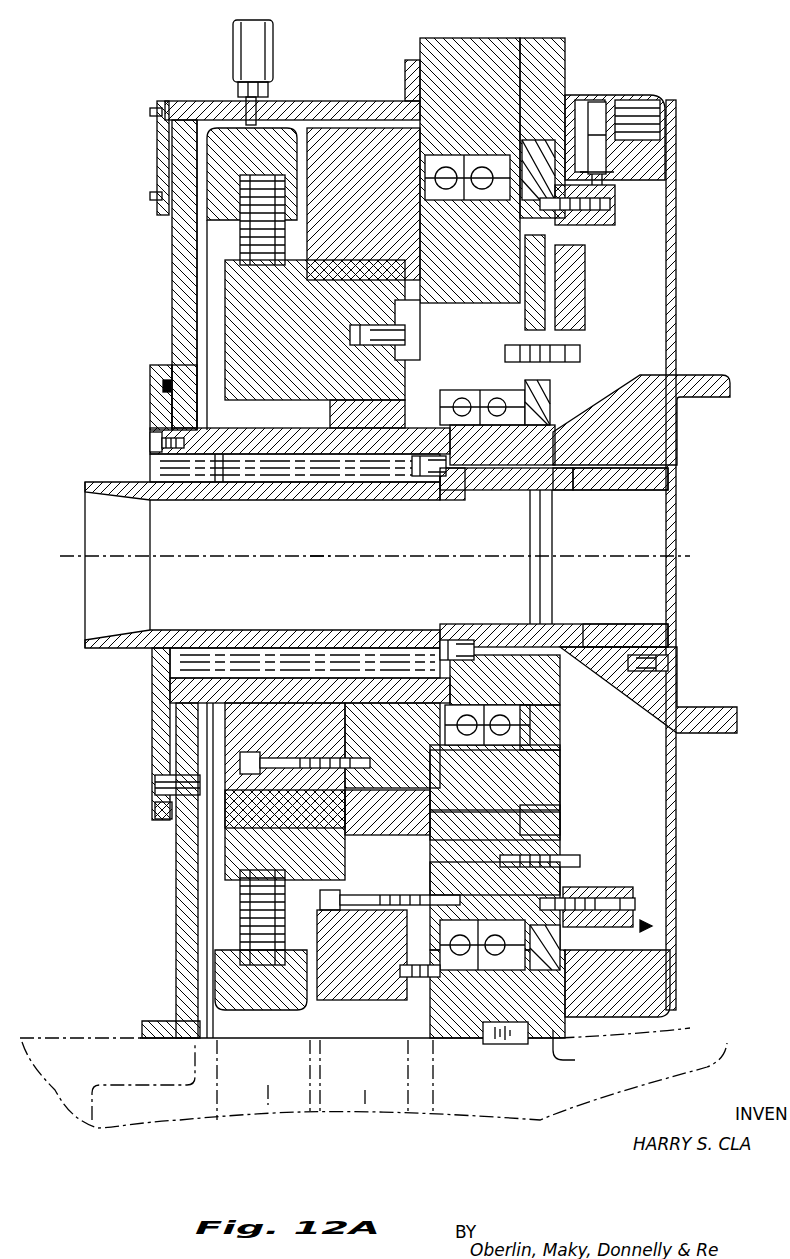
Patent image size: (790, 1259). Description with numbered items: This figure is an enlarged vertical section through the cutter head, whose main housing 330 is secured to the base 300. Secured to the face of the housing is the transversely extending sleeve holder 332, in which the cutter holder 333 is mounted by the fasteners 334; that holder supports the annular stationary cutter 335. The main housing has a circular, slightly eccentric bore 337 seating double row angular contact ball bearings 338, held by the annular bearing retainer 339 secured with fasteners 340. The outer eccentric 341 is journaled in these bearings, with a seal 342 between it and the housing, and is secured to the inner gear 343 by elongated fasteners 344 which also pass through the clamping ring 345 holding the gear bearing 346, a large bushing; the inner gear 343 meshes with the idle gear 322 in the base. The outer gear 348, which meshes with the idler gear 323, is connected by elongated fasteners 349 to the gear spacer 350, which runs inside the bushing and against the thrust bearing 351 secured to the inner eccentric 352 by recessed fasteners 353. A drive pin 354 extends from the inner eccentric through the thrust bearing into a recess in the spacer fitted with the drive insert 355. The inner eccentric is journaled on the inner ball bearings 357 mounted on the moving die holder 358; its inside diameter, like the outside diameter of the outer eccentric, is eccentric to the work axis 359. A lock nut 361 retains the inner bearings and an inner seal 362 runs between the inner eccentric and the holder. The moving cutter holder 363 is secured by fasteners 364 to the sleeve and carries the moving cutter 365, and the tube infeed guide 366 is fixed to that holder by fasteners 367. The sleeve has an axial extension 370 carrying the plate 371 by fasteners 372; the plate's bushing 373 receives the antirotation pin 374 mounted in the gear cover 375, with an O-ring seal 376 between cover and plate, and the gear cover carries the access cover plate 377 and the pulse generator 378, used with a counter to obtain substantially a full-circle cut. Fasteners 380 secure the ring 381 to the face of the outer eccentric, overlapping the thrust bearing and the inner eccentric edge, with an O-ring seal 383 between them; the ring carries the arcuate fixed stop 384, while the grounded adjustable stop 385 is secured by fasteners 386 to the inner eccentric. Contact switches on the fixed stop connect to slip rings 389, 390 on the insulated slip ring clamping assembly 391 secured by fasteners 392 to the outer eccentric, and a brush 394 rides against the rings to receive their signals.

The base 300 is at (715, 1025).
The idle gear 322 is at (365, 1110).
The idler gear 323 is at (268, 1108).
The main housing 330 is at (581, 1047).
The sleeve holder 332 is at (668, 692).
The cutter holder 333 is at (640, 626).
The fasteners 334 is at (668, 658).
The annular stationary cutter 335 is at (572, 492).
The eccentric bore 337 is at (482, 968).
The double row angular contact ball bearings 338 is at (490, 160).
The annular bearing retainer 339 is at (412, 1040).
The fasteners 340 is at (410, 1003).
The outer eccentric 341 is at (545, 925).
The seal 342 is at (575, 953).
The inner gear 343 is at (360, 150).
The elongated fasteners 344 is at (352, 912).
The clamping ring 345 is at (330, 942).
The gear bearing 346 is at (345, 835).
The outer gear 348 is at (240, 848).
The elongated fasteners 349 is at (262, 760).
The gear spacer 350 is at (345, 760).
The thrust bearing 351 is at (440, 392).
The inner eccentric 352 is at (560, 776).
The recessed fasteners 353 is at (420, 750).
The drive pin 354 is at (362, 333).
The drive insert 355 is at (352, 352).
The double row angular contact ball bearings 357 is at (480, 705).
The moving die holder 358 is at (458, 492).
The work axis 359 is at (335, 560).
The lock nut 361 is at (405, 432).
The inner seal 362 is at (555, 735).
The cutter holder 363 is at (533, 505).
The fasteners 364 is at (470, 645).
The moving cutter 365 is at (557, 492).
The tube infeed guide 366 is at (262, 492).
The fasteners 367 is at (425, 476).
The axial extension 370 is at (220, 465).
The plate 371 is at (152, 400).
The fasteners 372 is at (150, 442).
The bushing 373 is at (155, 808).
The antirotation pin 374 is at (155, 785).
The gear cover 375 is at (172, 262).
The O-ring seal 376 is at (152, 378).
The access cover plate 377 is at (157, 155).
The pulse generator 378 is at (273, 50).
The fasteners 380 is at (565, 861).
The ring 381 is at (555, 838).
The O-ring seal 383 is at (545, 815).
The fixed stop 384 is at (560, 300).
The adjustable stop 385 is at (585, 332).
The fasteners 386 is at (588, 356).
The slip ring 389 is at (595, 226).
The slip ring 390 is at (618, 186).
The insulated slip ring clamping assembly 391 is at (652, 926).
The fasteners 392 is at (640, 908).
The brush 394 is at (586, 150).